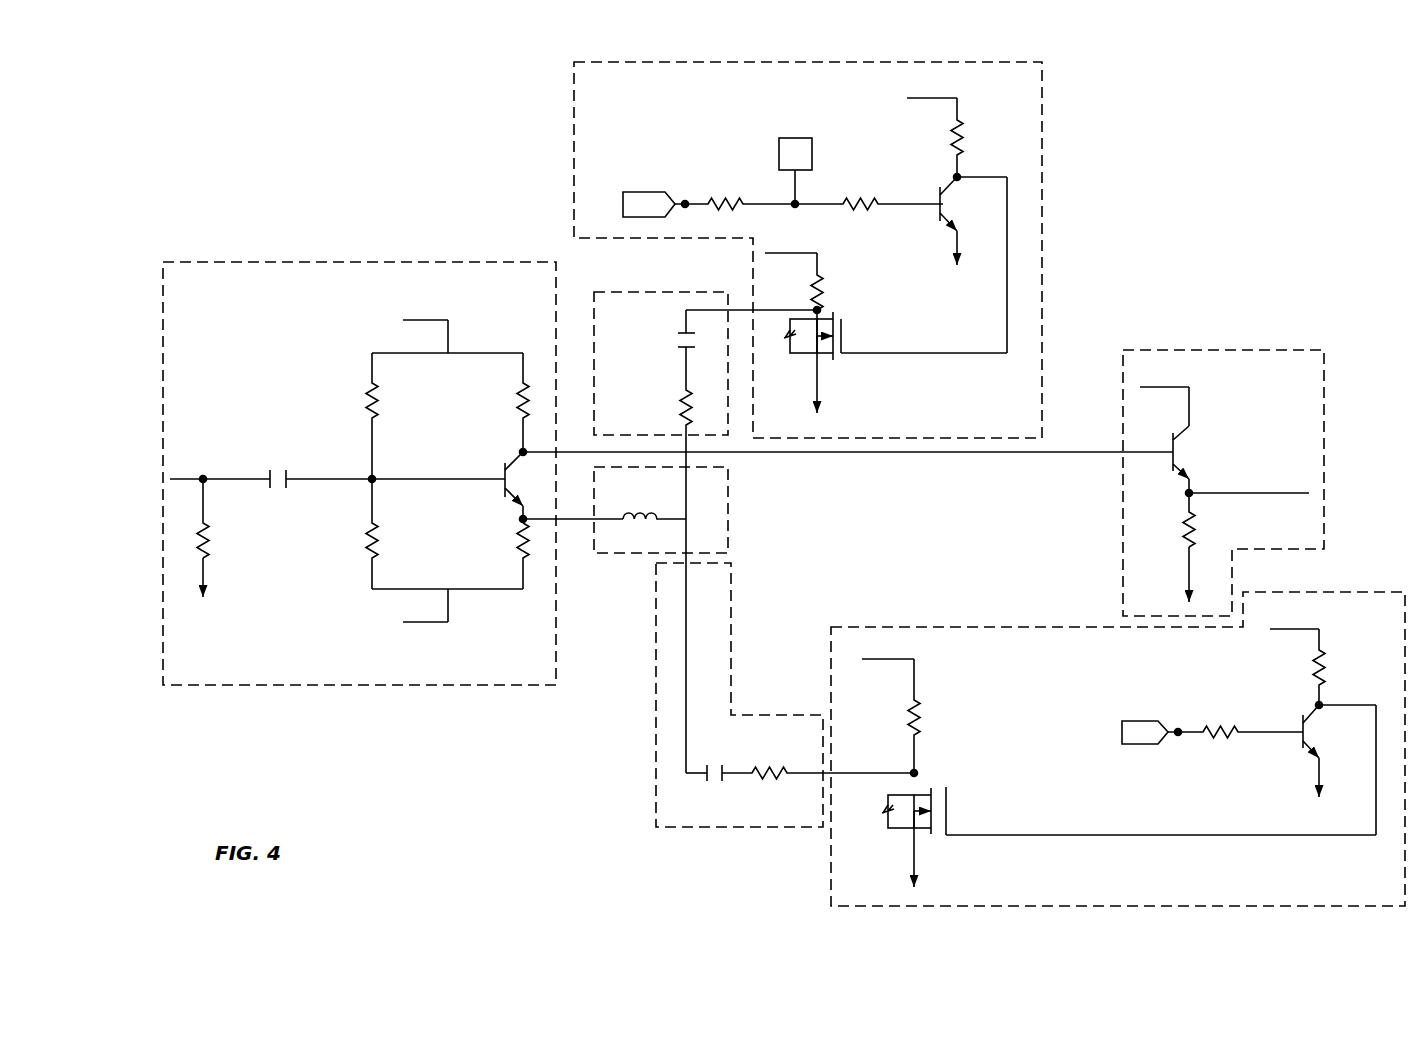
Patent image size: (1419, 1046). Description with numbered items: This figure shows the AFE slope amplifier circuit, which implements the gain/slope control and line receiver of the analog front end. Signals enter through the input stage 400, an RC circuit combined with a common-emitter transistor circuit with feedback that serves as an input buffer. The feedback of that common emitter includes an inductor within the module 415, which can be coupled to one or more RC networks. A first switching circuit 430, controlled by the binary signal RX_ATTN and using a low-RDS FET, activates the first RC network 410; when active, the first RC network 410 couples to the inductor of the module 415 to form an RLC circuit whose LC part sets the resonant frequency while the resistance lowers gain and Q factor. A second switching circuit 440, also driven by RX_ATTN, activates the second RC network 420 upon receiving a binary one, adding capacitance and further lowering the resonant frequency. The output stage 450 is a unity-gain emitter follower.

The input stage 400 is at (352, 687).
The first RC network 410 is at (667, 272).
The module 415 is at (729, 488).
The second RC network 420 is at (734, 592).
The first switching circuit 430 is at (1047, 182).
The second switching circuit 440 is at (975, 626).
The output stage 450 is at (1171, 349).